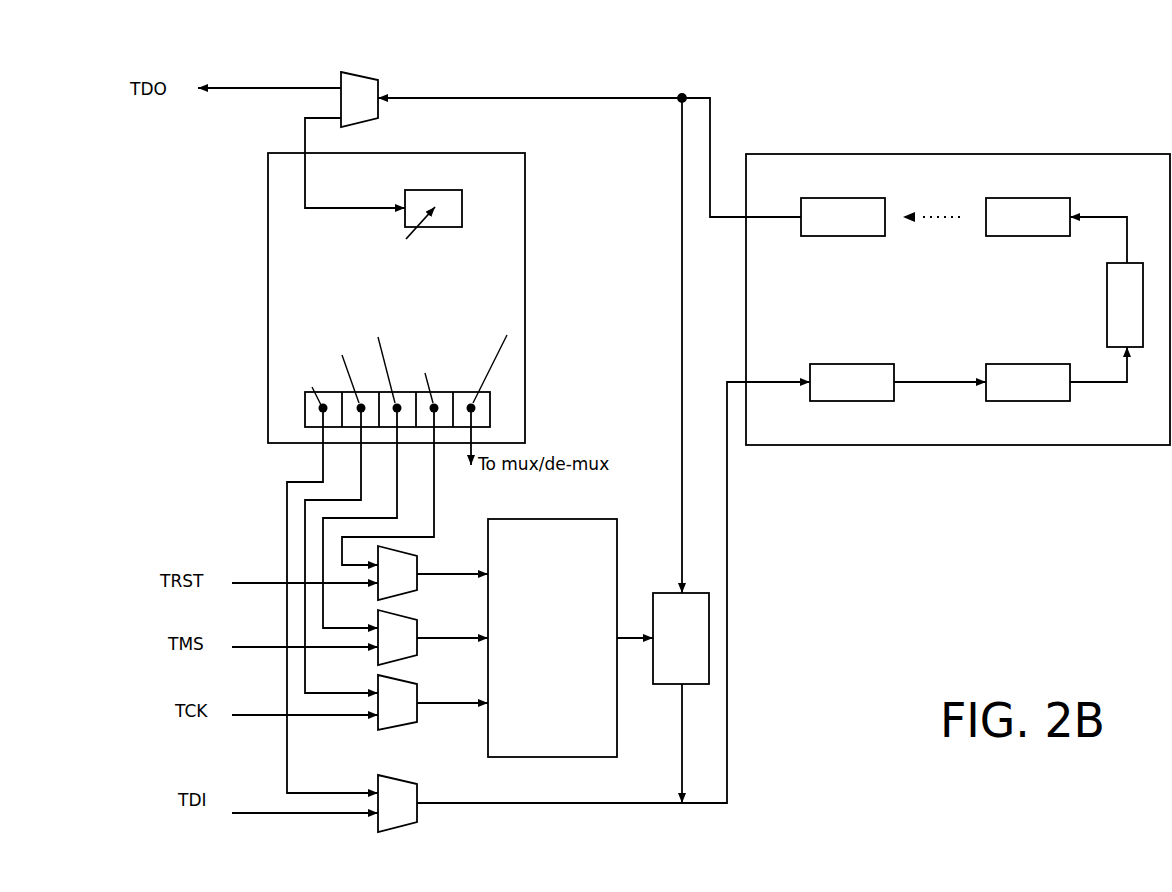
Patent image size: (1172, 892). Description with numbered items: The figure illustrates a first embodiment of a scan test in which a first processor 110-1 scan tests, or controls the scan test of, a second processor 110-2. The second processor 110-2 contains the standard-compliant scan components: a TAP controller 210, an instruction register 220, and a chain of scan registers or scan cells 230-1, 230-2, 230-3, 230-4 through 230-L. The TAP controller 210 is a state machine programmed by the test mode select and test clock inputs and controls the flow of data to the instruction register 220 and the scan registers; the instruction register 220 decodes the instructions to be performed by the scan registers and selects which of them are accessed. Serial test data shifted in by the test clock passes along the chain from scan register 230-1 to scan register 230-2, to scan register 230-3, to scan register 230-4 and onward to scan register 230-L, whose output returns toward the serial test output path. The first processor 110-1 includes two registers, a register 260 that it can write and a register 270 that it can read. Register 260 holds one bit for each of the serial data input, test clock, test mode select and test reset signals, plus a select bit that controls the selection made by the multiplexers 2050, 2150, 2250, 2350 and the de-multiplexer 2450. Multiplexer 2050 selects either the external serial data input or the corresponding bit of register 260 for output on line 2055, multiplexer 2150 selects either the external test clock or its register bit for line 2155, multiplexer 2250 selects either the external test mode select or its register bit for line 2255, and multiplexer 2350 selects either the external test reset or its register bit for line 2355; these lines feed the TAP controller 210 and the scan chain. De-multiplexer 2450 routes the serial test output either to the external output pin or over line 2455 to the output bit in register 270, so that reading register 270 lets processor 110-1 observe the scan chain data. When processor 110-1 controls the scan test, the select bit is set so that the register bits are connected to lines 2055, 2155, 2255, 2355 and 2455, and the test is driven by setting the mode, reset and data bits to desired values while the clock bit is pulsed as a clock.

The first processor 110-1 is at (267, 262).
The second processor 110-2 is at (1043, 153).
The de-multiplexer 2450 is at (358, 72).
The line 2455 is at (589, 142).
The register 270 is at (462, 209).
The register 260 is at (488, 408).
The multiplexer 2350 is at (417, 556).
The line 2355 is at (452, 564).
The multiplexer 2250 is at (378, 662).
The line 2255 is at (452, 628).
The multiplexer 2150 is at (403, 725).
The line 2155 is at (452, 691).
The multiplexer 2050 is at (400, 827).
The line 2055 is at (613, 594).
The TAP controller 210 is at (552, 638).
The instruction register 220 is at (681, 638).
The scan register 230-1 is at (852, 382).
The scan register 230-2 is at (1028, 382).
The scan register 230-3 is at (1125, 305).
The scan register 230-4 is at (1028, 217).
The scan register 230-L is at (843, 217).